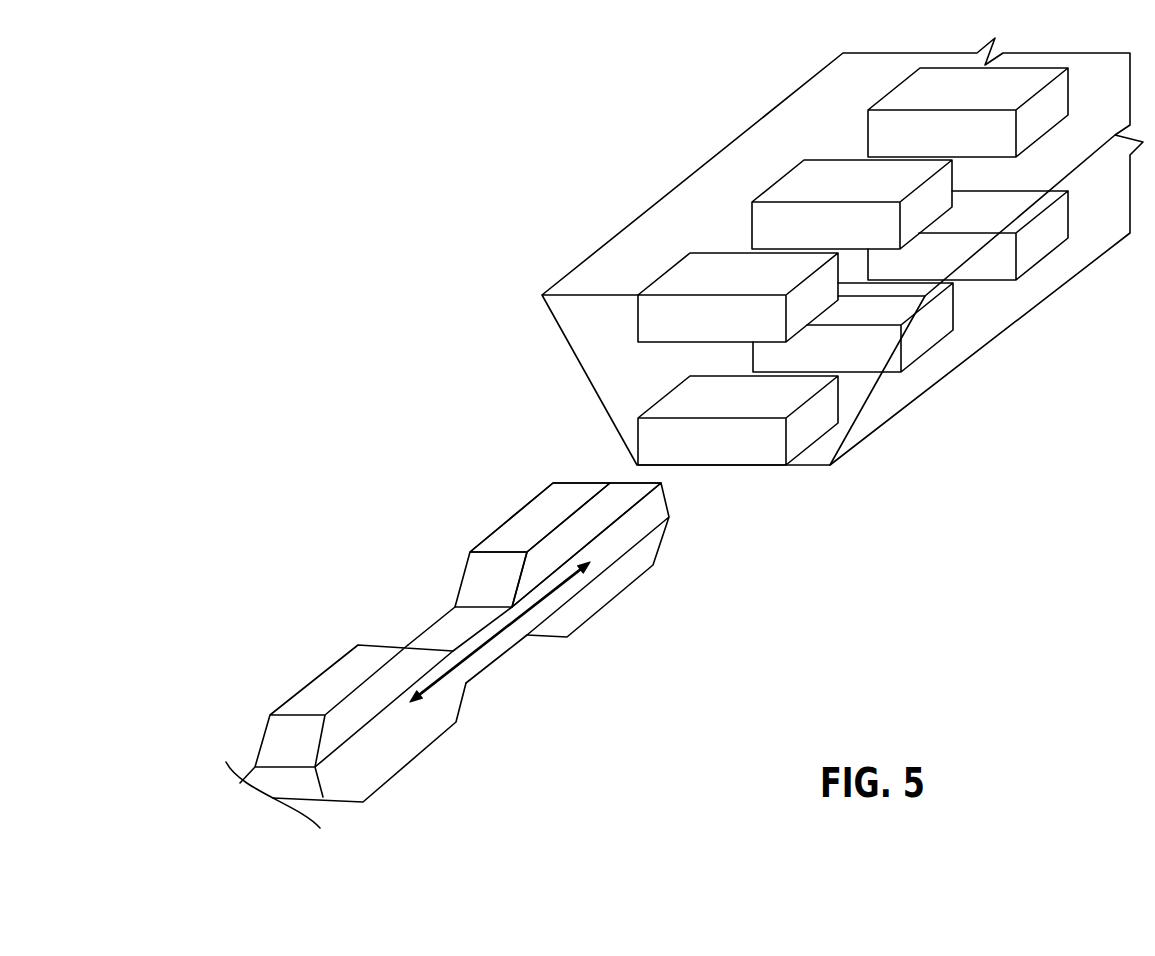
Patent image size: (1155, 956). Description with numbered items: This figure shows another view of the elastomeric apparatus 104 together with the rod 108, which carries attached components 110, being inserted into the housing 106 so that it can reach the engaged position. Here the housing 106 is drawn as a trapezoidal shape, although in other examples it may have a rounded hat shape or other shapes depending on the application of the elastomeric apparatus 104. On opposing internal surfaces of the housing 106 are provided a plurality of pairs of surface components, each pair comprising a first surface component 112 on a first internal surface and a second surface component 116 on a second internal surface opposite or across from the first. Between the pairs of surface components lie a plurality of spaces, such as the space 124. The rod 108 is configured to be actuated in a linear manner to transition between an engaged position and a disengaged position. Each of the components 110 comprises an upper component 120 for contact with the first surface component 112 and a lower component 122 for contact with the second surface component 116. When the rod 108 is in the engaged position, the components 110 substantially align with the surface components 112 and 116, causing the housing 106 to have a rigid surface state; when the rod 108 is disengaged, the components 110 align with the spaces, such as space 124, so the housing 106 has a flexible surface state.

The elastomeric apparatus 104 is at (582, 124).
The housing 106 is at (587, 260).
The rod 108 is at (433, 622).
The components 110 is at (494, 501).
The first surface component 112 is at (723, 241).
The second surface component 116 is at (734, 463).
The upper component 120 is at (540, 517).
The lower component 122 is at (586, 546).
The space 124 is at (857, 391).